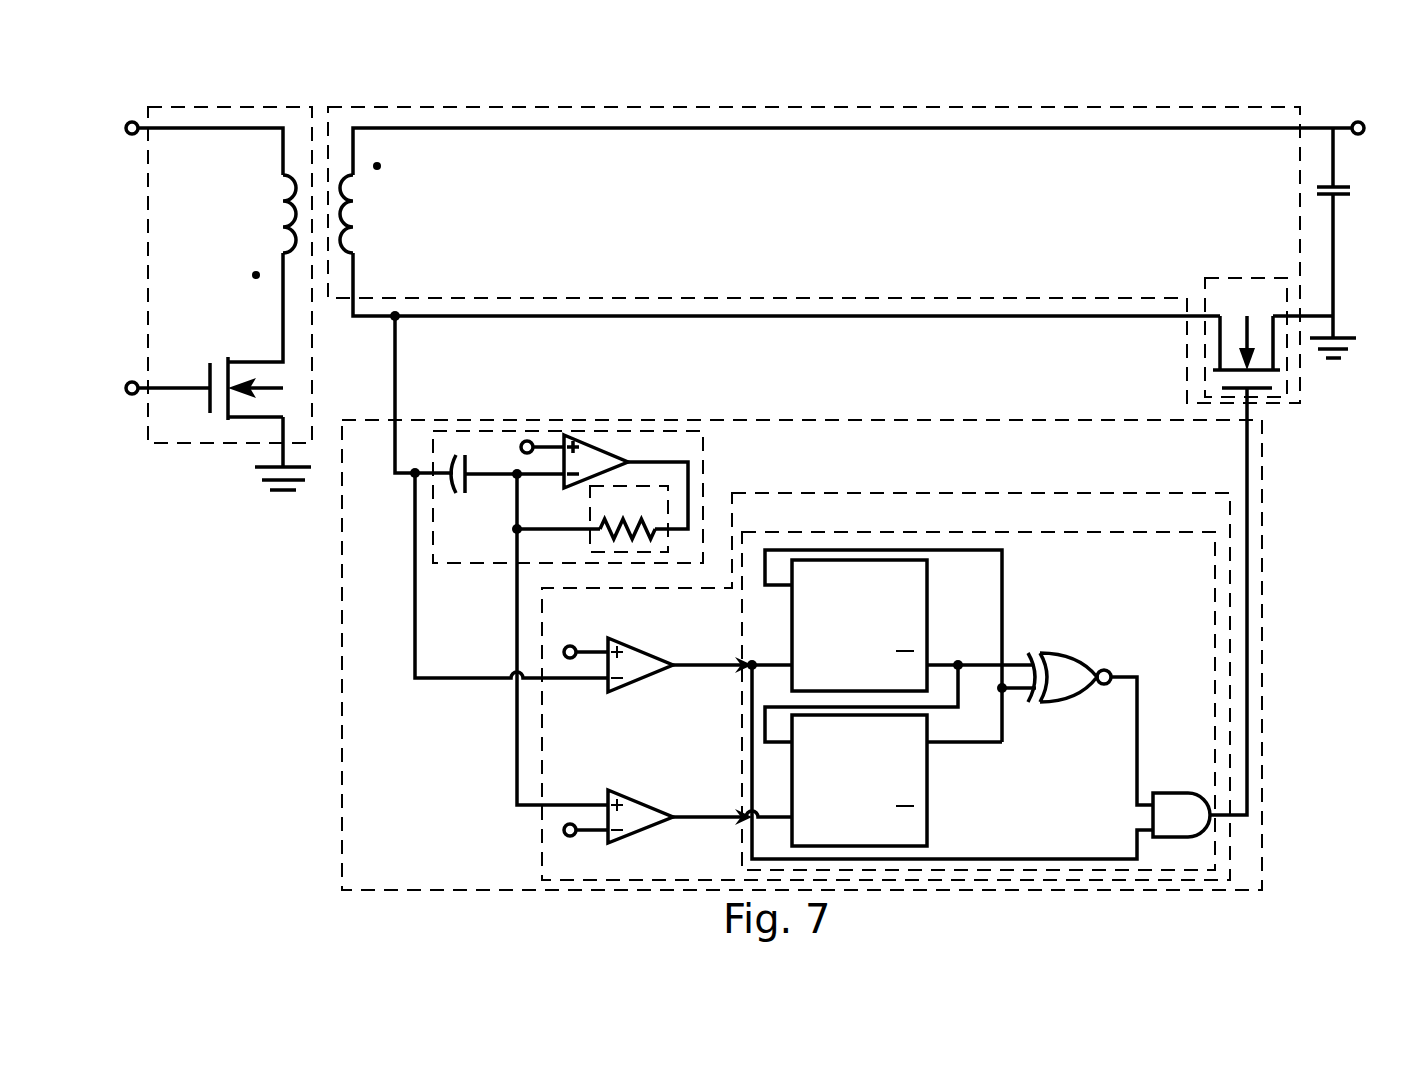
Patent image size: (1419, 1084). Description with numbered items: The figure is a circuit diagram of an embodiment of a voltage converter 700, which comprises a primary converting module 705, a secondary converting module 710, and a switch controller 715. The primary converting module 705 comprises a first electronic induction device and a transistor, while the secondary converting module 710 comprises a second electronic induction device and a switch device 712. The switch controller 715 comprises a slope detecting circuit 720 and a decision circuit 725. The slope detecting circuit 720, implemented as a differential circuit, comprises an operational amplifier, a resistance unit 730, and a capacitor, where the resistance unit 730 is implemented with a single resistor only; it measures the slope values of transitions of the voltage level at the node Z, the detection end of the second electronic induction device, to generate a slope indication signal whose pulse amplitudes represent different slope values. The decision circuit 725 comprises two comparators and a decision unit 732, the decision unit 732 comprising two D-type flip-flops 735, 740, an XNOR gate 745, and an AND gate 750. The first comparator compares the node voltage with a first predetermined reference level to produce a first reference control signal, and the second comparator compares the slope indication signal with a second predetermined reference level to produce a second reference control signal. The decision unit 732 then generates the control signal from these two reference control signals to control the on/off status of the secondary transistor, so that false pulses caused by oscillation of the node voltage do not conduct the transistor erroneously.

The voltage converter 700 is at (293, 621).
The primary converting module 705 is at (180, 445).
The secondary converting module 710 is at (1250, 107).
The switch device 712 is at (1237, 278).
The switch controller 715 is at (1262, 568).
The slope detecting circuit 720 is at (703, 481).
The decision circuit 725 is at (1137, 510).
The resistance unit 730 is at (590, 543).
The decision unit 732 is at (1142, 543).
The D-type flip-flop 735 is at (927, 626).
The D-type flip-flop 740 is at (927, 792).
The XNOR gate 745 is at (1068, 655).
The AND gate 750 is at (1172, 793).